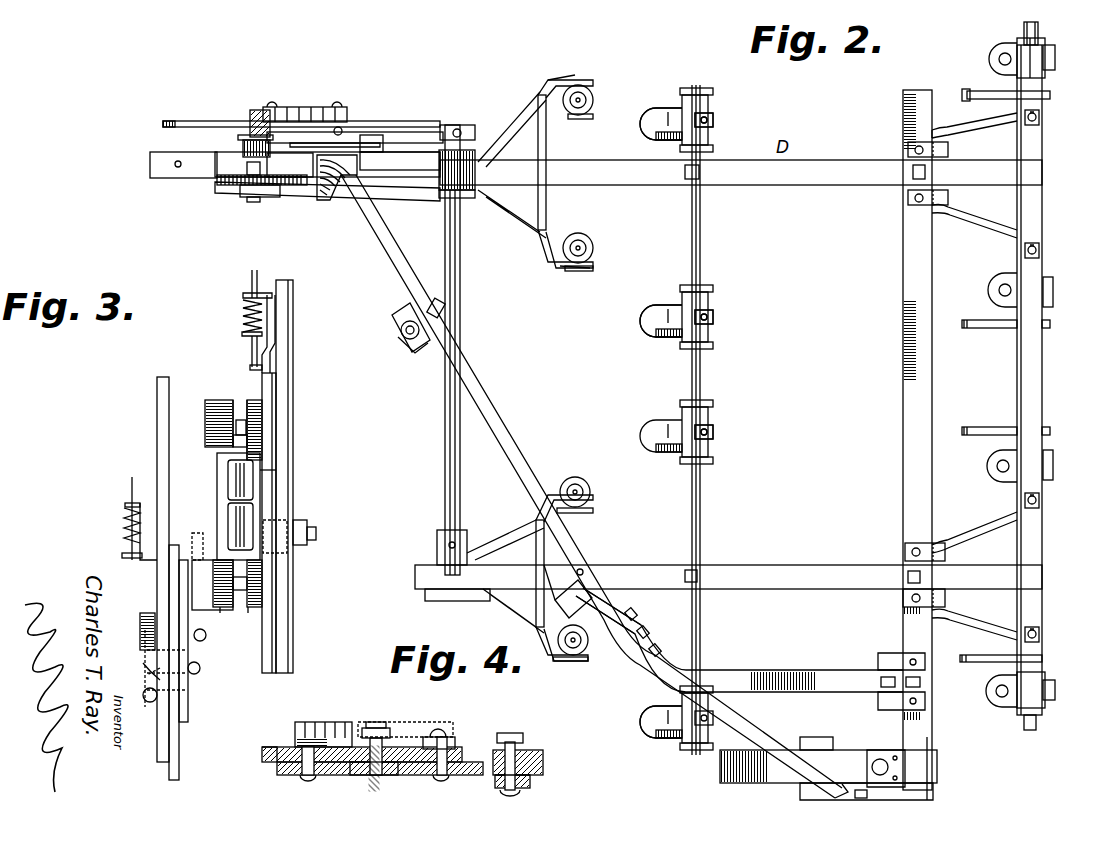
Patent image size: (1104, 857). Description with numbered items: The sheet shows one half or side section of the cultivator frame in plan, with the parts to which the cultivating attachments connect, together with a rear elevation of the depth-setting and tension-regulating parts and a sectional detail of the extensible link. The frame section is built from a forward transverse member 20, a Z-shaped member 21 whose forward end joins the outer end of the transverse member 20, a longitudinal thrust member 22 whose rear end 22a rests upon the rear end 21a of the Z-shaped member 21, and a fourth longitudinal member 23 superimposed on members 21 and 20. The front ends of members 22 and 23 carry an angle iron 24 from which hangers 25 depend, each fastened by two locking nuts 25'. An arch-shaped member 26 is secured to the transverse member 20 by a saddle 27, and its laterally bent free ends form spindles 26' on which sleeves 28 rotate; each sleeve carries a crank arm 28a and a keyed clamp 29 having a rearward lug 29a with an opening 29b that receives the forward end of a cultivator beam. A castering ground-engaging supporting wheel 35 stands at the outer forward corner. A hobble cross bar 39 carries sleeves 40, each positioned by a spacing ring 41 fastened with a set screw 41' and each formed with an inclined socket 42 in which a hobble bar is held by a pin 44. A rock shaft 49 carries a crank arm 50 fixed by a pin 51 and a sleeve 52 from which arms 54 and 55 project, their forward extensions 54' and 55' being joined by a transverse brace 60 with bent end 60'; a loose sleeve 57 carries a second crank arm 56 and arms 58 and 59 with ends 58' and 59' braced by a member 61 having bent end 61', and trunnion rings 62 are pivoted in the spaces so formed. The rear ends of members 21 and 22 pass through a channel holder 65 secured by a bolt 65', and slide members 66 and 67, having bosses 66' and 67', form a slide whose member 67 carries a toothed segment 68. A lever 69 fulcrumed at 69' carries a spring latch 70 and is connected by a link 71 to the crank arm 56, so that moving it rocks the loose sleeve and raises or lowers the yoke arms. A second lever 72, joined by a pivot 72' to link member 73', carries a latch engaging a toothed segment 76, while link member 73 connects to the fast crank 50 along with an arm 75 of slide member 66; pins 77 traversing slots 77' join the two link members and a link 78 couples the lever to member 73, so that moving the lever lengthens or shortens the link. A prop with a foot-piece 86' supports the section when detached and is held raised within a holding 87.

In FIG. 2, the transverse member 20 is at (903, 456).
In FIG. 2, the Z-shaped member 21 is at (512, 448).
In FIG. 2, the rear end of the Z-shaped member 21a is at (335, 200).
In FIG. 3, the rear end of the Z-shaped member 21a is at (270, 520).
In FIG. 2, the longitudinal thrust member 22 is at (330, 182).
In FIG. 2, the rear end of the longitudinal thrust member 22a is at (170, 177).
In FIG. 3, the rear end of the longitudinal thrust member 22a is at (262, 483).
In FIG. 2, the fourth longitudinal member 23 is at (638, 570).
In FIG. 2, the angle iron 24 is at (1022, 390).
In FIG. 2, the hanger 25 is at (1056, 385).
In FIG. 2, the locking nut 25' is at (1060, 370).
In FIG. 2, the arch-shaped member 26 is at (974, 376).
In FIG. 2, the spindle 26' is at (1007, 388).
In FIG. 2, the saddle 27 is at (906, 148).
In FIG. 2, the sleeve 28 is at (1050, 92).
In FIG. 2, the crank arm 28a is at (980, 330).
In FIG. 2, the clamp 29 is at (1055, 54).
In FIG. 2, the lug 29a is at (972, 680).
In FIG. 2, the opening 29b is at (990, 722).
In FIG. 2, the ground-engaging supporting wheel 35 is at (725, 772).
In FIG. 2, the hobble cross bar 39 is at (700, 378).
In FIG. 2, the sleeve 40 is at (710, 112).
In FIG. 2, the spacing ring 41 is at (724, 276).
In FIG. 2, the set screw 41' is at (733, 280).
In FIG. 2, the socket 42 is at (665, 108).
In FIG. 2, the pin 44 is at (660, 132).
In FIG. 2, the rock shaft 49 is at (445, 438).
In FIG. 2, the crank arm 50 is at (476, 140).
In FIG. 2, the pin 51 is at (462, 125).
In FIG. 2, the sleeve 52 is at (437, 565).
In FIG. 2, the arm 54 is at (513, 615).
In FIG. 2, the forward extension of arm 54 54' is at (576, 661).
In FIG. 2, the arm 55 is at (505, 569).
In FIG. 2, the forward extension of arm 55 55' is at (572, 486).
In FIG. 2, the second crank arm 56 is at (472, 196).
In FIG. 2, the sleeve 57 is at (478, 198).
In FIG. 2, the arm 58 is at (512, 225).
In FIG. 2, the forward extension of arm 58 58' is at (578, 284).
In FIG. 2, the arm 59 is at (512, 128).
In FIG. 2, the forward extension of arm 59 59' is at (575, 66).
In FIG. 2, the transverse brace 60 is at (574, 564).
In FIG. 2, the forwardly bent end of brace 60 60' is at (617, 611).
In FIG. 2, the brace member 61 is at (558, 162).
In FIG. 2, the forwardly bent end of brace 61 61' is at (585, 244).
In FIG. 2, the trunnion ring 62 is at (594, 100).
In FIG. 2, the holder 65 is at (241, 210).
In FIG. 3, the holder 65 is at (216, 506).
In FIG. 3, the bolt 65' is at (280, 501).
In FIG. 2, the slide member 66 is at (241, 131).
In FIG. 3, the slide member 66 is at (217, 431).
In FIG. 2, the boss 66' is at (290, 163).
In FIG. 3, the boss 66' is at (232, 418).
In FIG. 3, the slide member 67 is at (272, 582).
In FIG. 3, the boss 67' is at (237, 628).
In FIG. 2, the toothed segment 68 is at (224, 186).
In FIG. 3, the toothed segment 68 is at (276, 393).
In FIG. 2, the manually operable lever 69 is at (263, 215).
In FIG. 3, the manually operable lever 69 is at (302, 476).
In FIG. 3, the fulcrum 69' is at (326, 530).
In FIG. 3, the spring latch 70 is at (252, 362).
In FIG. 2, the link 71 is at (398, 201).
In FIG. 3, the link 71 is at (312, 545).
In FIG. 2, the second manually operable lever 72 is at (249, 112).
In FIG. 3, the second manually operable lever 72 is at (145, 569).
In FIG. 4, the second manually operable lever 72 is at (406, 738).
In FIG. 3, the pivot 72' is at (158, 584).
In FIG. 4, the pivot 72' is at (365, 731).
In FIG. 2, the link member 73 is at (301, 116).
In FIG. 3, the link member 73 is at (207, 641).
In FIG. 4, the link member 73 is at (372, 778).
In FIG. 2, the link member 73' is at (176, 108).
In FIG. 3, the link member 73' is at (190, 662).
In FIG. 4, the link member 73' is at (260, 739).
In FIG. 2, the arm 75 is at (400, 162).
In FIG. 3, the arm 75 is at (194, 555).
In FIG. 2, the toothed segment 76 is at (302, 107).
In FIG. 3, the toothed segment 76 is at (146, 630).
In FIG. 4, the toothed segment 76 is at (310, 722).
In FIG. 2, the pin 77 is at (359, 107).
In FIG. 3, the pin 77 is at (208, 665).
In FIG. 4, the pin 77 is at (385, 779).
In FIG. 4, the slot 77' is at (444, 779).
In FIG. 2, the link 78 is at (375, 135).
In FIG. 4, the link 78 is at (535, 752).
In FIG. 2, the foot-piece 86' is at (405, 314).
In FIG. 2, the holding 87 is at (580, 580).